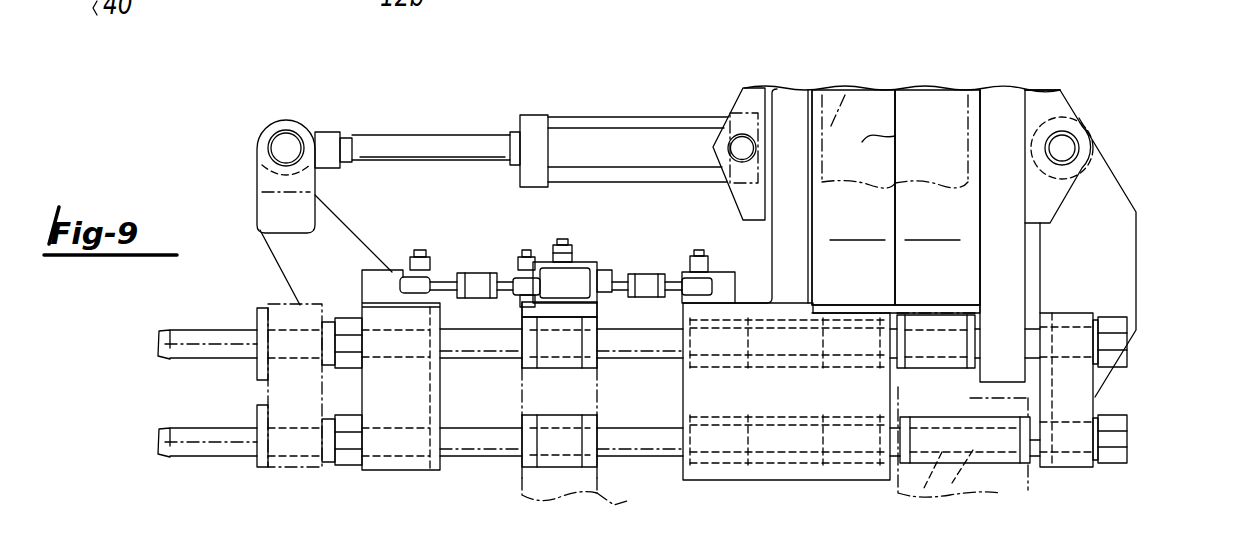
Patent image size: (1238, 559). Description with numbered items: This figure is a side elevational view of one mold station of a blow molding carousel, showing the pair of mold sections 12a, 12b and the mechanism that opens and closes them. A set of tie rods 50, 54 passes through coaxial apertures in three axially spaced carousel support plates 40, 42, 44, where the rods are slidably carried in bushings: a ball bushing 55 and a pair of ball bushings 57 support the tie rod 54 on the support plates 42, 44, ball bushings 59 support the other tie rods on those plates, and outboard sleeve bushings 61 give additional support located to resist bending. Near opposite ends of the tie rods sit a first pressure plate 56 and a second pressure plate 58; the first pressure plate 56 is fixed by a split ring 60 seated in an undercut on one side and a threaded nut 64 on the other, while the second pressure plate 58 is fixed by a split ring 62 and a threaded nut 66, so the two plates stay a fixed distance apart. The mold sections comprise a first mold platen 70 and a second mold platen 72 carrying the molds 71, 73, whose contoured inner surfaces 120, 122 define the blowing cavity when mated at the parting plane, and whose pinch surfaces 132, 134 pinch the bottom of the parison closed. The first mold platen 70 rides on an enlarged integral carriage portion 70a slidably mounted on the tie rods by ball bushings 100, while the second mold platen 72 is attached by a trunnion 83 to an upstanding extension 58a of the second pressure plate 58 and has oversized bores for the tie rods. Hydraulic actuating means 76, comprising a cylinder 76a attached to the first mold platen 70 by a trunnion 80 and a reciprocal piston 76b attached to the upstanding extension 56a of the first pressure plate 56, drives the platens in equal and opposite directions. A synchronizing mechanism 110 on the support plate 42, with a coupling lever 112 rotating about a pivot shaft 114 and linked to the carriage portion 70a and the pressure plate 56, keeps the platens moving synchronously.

The mold section 12a is at (833, 72).
The mold section 12b is at (1004, 66).
The carousel support plate 40 is at (303, 467).
The carousel support plate 42 is at (628, 495).
The carousel support plate 44 is at (987, 473).
The tie rod 50 is at (228, 292).
The tie rod 54 is at (205, 428).
The ball bushing 55 is at (522, 495).
The first pressure plate 56 is at (393, 461).
The upstanding extension 56a is at (337, 228).
The ball bushing 57 is at (947, 489).
The second pressure plate 58 is at (1090, 377).
The upstanding extension 58a is at (1113, 210).
The ball bushing 59 is at (541, 373).
The split ring 60 is at (442, 320).
The outboard sleeve bushing 61 is at (277, 300).
The split ring 62 is at (1045, 320).
The threaded nut 64 is at (350, 318).
The threaded nut 66 is at (1118, 325).
The first mold platen 70 is at (788, 99).
The carriage portion 70a is at (690, 393).
The mold 71 is at (852, 228).
The second mold platen 72 is at (1013, 100).
The mold 73 is at (938, 224).
The hydraulic actuating means 76 is at (670, 118).
The cylinder 76a is at (643, 176).
The reciprocal piston 76b is at (398, 135).
The trunnion 80 is at (742, 150).
The trunnion 83 is at (1068, 144).
The ball bushing 100 is at (750, 367).
The synchronizing mechanism 110 is at (533, 248).
The coupling lever 112 is at (580, 282).
The pivot shaft 114 is at (560, 245).
The contoured inner surface 120 is at (845, 95).
The contoured inner surface 122 is at (967, 113).
The pinch surface 132 is at (895, 248).
The pinch surface 134 is at (898, 276).